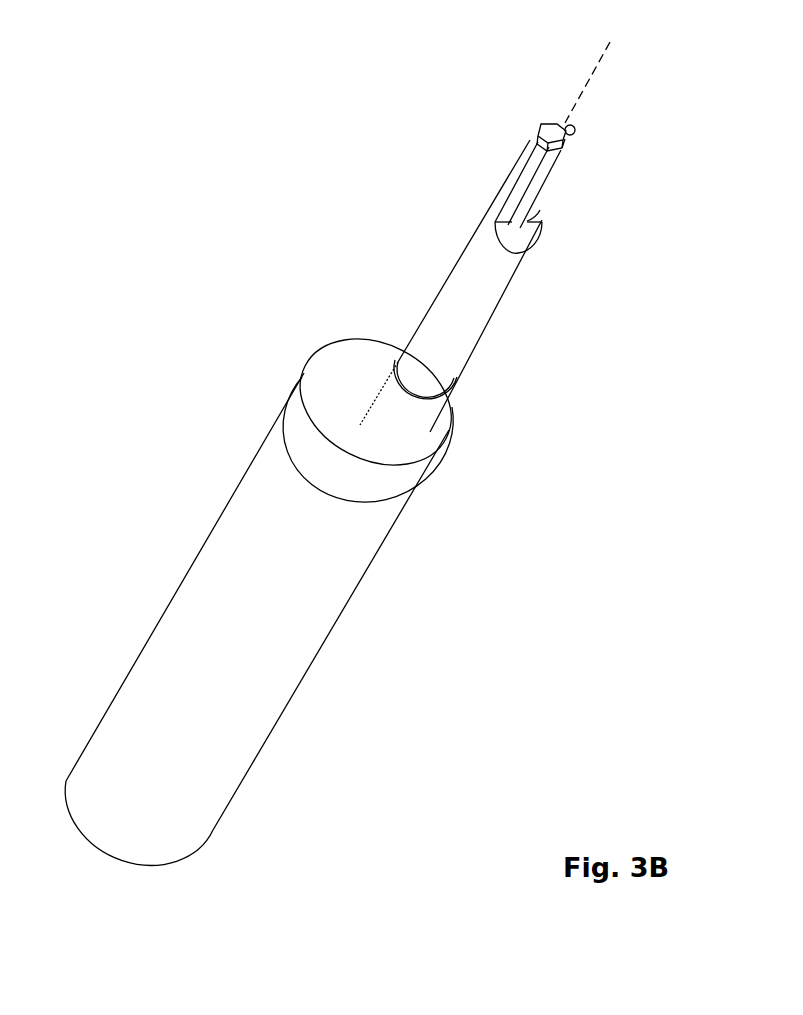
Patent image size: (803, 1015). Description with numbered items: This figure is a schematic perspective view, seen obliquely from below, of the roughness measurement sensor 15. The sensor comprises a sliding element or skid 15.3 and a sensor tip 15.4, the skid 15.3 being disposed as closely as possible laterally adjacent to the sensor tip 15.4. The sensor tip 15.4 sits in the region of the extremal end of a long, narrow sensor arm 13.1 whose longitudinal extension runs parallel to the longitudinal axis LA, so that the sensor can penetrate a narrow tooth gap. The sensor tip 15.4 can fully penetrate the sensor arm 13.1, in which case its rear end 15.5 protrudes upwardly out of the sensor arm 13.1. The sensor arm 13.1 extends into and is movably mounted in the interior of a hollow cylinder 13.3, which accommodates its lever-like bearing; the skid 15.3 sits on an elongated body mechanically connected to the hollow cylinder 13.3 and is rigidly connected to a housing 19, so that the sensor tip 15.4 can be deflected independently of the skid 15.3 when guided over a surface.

The housing 19 is at (200, 558).
The roughness measurement sensor 15 is at (288, 293).
The hollow cylinder 13.3 is at (477, 307).
The sensor arm 13.1 is at (535, 190).
The rear end of the sensor tip 15.5 is at (507, 183).
The sliding element 15.3 is at (540, 140).
The sensor tip 15.4 is at (572, 141).
The longitudinal axis LA is at (602, 71).